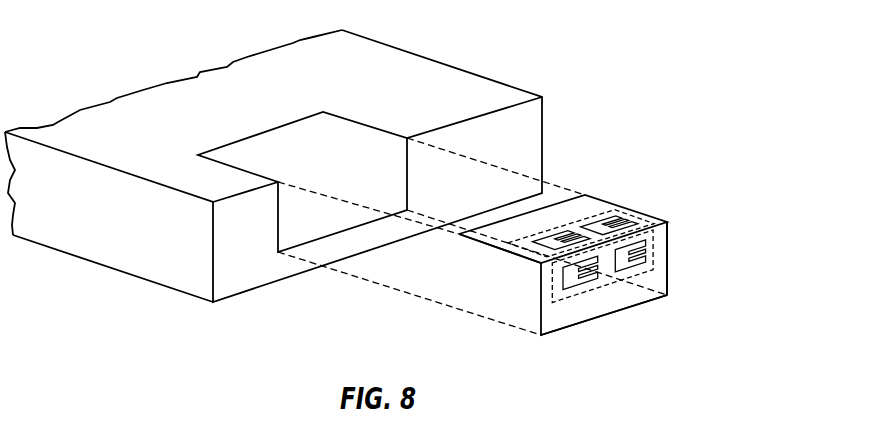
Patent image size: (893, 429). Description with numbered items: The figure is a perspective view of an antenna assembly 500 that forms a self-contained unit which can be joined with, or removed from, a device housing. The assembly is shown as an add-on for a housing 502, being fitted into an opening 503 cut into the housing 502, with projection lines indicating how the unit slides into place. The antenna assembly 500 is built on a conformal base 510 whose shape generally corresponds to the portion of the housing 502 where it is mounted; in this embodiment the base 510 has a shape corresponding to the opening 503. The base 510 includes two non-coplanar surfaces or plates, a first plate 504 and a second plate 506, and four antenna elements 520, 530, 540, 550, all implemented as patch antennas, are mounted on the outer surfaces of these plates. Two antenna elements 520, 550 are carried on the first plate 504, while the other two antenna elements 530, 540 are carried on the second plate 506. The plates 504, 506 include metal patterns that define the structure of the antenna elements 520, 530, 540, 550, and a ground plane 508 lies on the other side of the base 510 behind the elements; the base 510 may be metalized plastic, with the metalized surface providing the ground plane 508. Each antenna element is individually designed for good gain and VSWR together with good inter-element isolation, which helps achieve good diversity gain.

The antenna assembly 500 is at (665, 178).
The housing 502 is at (443, 62).
The opening 503 is at (267, 143).
The first plate 504 is at (463, 238).
The second plate 506 is at (557, 322).
The ground plane 508 is at (527, 238).
The conformal base 510 is at (674, 281).
The antenna element 520 is at (540, 258).
The antenna element 530 is at (562, 279).
The antenna element 540 is at (623, 267).
The antenna element 550 is at (593, 227).